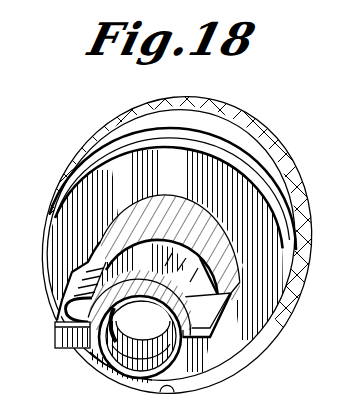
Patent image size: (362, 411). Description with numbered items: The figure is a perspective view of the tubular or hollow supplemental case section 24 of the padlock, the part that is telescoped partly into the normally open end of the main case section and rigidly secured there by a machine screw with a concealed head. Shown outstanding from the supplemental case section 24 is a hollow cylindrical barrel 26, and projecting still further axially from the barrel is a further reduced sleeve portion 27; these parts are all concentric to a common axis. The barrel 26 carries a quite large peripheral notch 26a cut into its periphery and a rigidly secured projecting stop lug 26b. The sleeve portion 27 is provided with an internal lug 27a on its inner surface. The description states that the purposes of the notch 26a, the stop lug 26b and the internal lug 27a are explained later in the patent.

The tubular supplemental case section 24 is at (250, 147).
The hollow cylindrical barrel 26 is at (190, 238).
The peripheral notch 26a is at (220, 318).
The projecting stop lug 26b is at (70, 334).
The sleeve portion 27 is at (183, 367).
The internal lug 27a is at (113, 333).